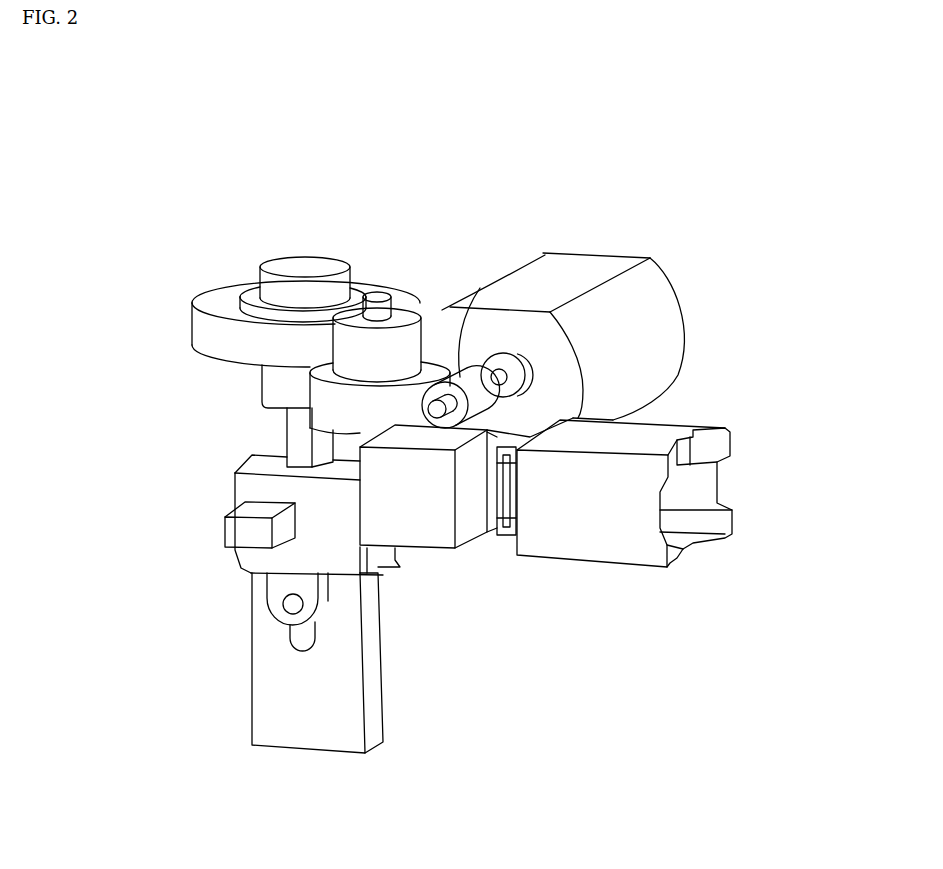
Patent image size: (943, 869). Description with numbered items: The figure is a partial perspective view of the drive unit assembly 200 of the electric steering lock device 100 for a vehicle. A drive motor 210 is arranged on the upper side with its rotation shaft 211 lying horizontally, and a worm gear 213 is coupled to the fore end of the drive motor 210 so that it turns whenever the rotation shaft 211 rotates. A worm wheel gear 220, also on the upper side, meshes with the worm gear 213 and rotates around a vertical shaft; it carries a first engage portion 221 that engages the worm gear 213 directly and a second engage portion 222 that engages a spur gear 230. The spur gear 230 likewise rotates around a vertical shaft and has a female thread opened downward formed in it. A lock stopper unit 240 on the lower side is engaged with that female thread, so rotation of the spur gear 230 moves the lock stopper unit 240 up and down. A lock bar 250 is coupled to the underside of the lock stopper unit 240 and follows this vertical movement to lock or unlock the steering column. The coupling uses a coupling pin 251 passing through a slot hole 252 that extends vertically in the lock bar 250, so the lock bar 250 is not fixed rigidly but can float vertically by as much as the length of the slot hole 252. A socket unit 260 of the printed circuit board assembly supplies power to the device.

The electric steering lock device 100 is at (695, 216).
The drive unit assembly 200 is at (480, 183).
The drive motor 210 is at (658, 318).
The rotation shaft 211 is at (495, 366).
The worm gear 213 is at (480, 288).
The worm wheel gear 220 is at (407, 110).
The first engage portion 221 is at (337, 407).
The second engage portion 222 is at (378, 337).
The spur gear 230 is at (230, 345).
The lock stopper unit 240 is at (235, 494).
The lock bar 250 is at (290, 665).
The coupling pin 251 is at (293, 605).
The slot hole 252 is at (310, 637).
The socket unit 260 is at (595, 528).